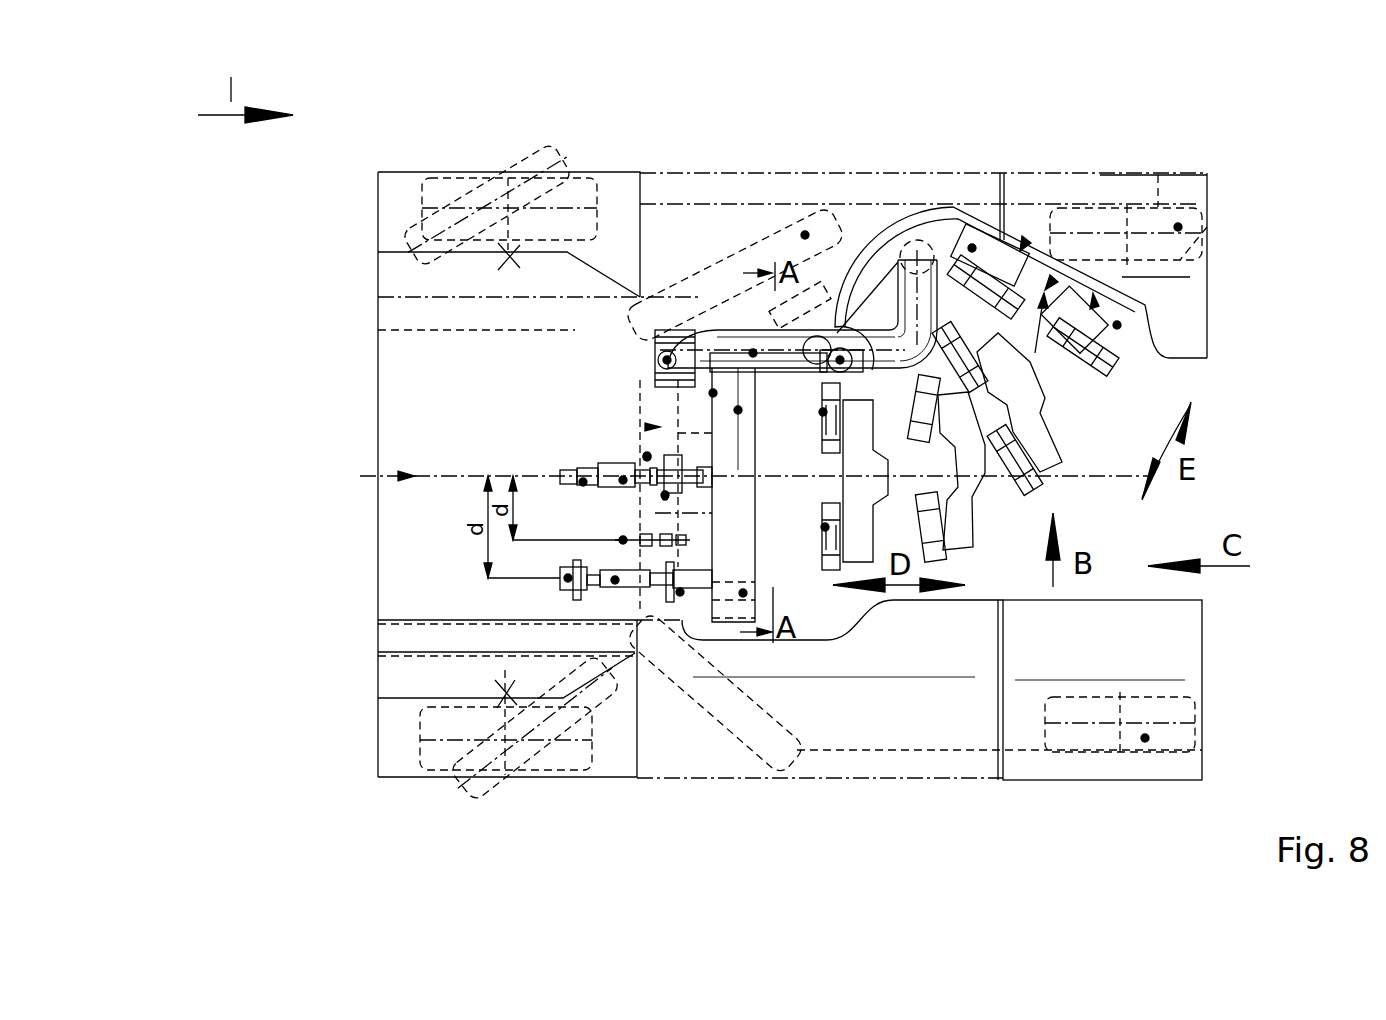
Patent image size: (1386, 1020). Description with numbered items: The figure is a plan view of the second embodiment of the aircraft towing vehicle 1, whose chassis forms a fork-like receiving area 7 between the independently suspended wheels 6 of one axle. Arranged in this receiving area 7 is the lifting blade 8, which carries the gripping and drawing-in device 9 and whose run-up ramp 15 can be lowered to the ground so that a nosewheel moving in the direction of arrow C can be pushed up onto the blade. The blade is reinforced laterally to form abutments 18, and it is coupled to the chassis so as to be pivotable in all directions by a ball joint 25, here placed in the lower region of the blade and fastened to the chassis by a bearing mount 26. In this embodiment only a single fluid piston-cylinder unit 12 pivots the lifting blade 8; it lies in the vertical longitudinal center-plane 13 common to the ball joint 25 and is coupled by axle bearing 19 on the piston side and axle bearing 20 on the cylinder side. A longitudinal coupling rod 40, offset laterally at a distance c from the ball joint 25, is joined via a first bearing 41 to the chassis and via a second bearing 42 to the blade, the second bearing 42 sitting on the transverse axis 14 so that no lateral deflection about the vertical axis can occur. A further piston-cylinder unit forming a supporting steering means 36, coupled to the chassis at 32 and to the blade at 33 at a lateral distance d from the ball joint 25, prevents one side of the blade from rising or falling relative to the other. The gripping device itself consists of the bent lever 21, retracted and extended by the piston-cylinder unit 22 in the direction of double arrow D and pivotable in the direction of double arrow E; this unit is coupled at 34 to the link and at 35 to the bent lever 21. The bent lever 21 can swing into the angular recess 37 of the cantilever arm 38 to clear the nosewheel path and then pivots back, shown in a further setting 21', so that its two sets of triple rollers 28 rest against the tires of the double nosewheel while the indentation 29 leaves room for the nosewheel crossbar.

The towing vehicle 1 is at (445, 150).
The wheels 6 is at (1117, 325).
The fork-like receiving area 7 is at (790, 470).
The lifting blade 8 is at (713, 393).
The gripping and drawing-in device 9 is at (1022, 247).
The fluid piston-cylinder unit 12 is at (623, 480).
The longitudinal axis 13 is at (400, 477).
The transverse axis 14 is at (655, 427).
The run-up ramp 15 is at (738, 410).
The abutments 18 is at (647, 457).
The axle bearing 19 is at (743, 593).
The axle bearing 20 is at (583, 482).
The bent lever 21 is at (988, 178).
The bent lever position 21' is at (1270, 149).
The piston-cylinder unit 22 is at (753, 353).
The ball joint 25 is at (664, 499).
The bearing mount 26 is at (647, 456).
The triple rollers 28 is at (823, 412).
The indentation 29 is at (1050, 283).
The coupling point 32 is at (623, 540).
The coupling point 33 is at (690, 580).
The coupling point 34 is at (667, 360).
The coupling point 35 is at (840, 360).
The supporting steering means 36 is at (665, 495).
The angular recess 37 is at (1093, 300).
The cantilever arm 38 is at (805, 235).
The longitudinal coupling rod 40 is at (615, 580).
The first bearing 41 is at (568, 578).
The second bearing 42 is at (680, 592).